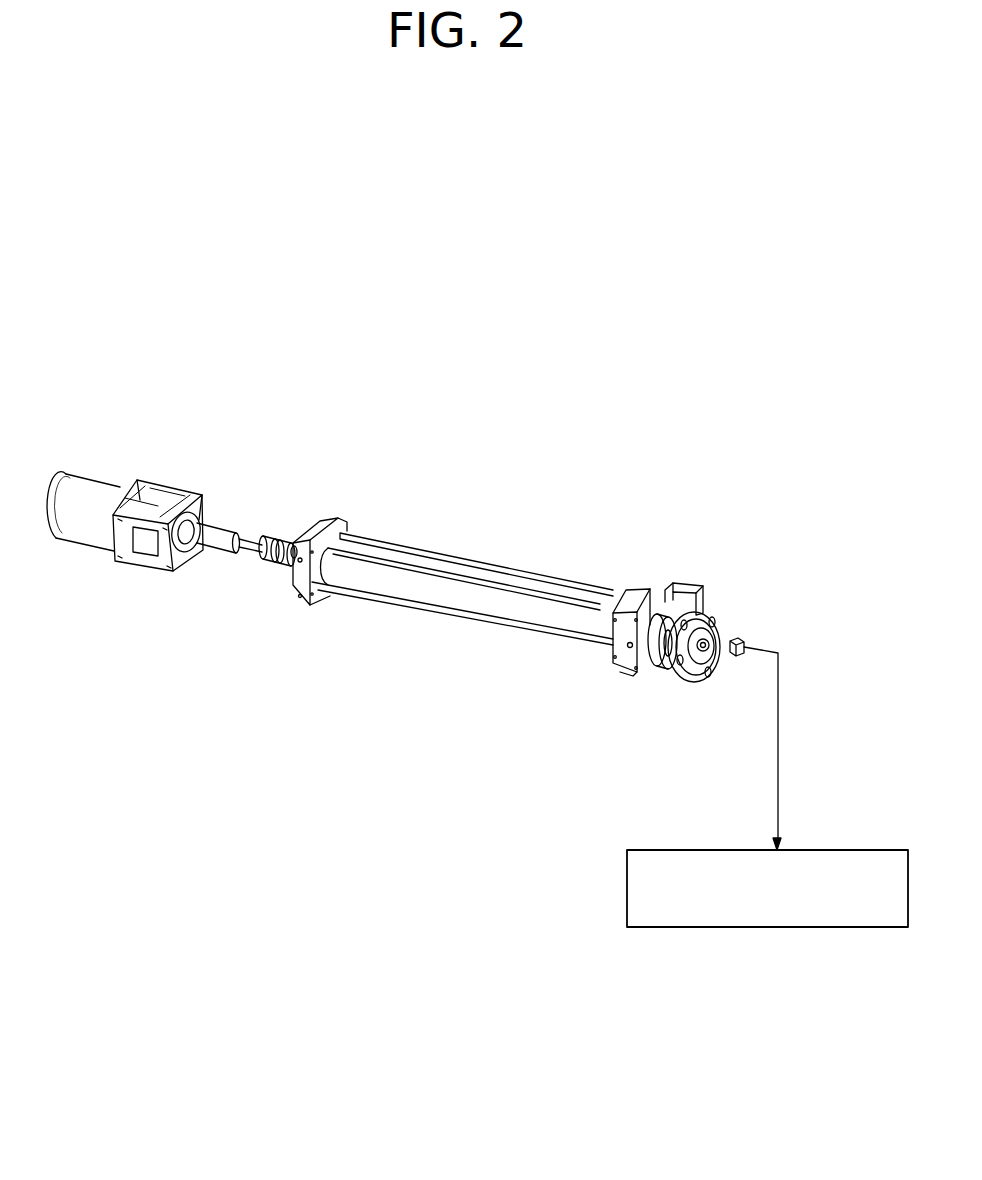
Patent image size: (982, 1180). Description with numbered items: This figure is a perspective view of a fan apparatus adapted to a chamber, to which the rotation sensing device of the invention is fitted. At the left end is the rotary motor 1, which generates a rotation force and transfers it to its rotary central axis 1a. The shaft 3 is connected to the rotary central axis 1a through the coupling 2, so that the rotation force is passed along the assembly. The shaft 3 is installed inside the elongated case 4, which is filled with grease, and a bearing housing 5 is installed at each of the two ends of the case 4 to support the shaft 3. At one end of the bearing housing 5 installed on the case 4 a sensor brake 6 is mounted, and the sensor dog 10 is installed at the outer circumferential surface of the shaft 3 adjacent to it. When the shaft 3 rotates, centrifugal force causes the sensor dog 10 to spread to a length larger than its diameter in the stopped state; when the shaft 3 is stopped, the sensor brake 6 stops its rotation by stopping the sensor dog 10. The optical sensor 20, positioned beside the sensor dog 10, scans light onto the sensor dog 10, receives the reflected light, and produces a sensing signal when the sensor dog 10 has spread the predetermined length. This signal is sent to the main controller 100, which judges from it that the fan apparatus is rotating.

The rotary motor 1 is at (95, 493).
The rotary central axis 1a is at (220, 523).
The coupling 2 is at (270, 557).
The shaft 3 is at (291, 562).
The case 4 is at (447, 598).
The bearing housing 5 is at (318, 532).
The sensor brake 6 is at (693, 588).
The sensor dog 10 is at (695, 682).
The optical sensor 20 is at (742, 637).
The main controller 100 is at (777, 928).